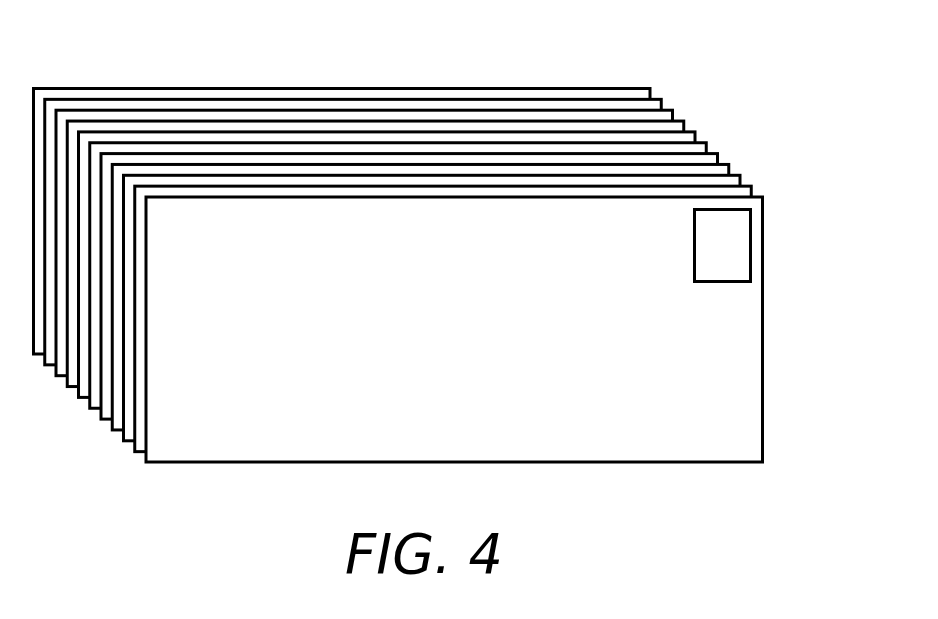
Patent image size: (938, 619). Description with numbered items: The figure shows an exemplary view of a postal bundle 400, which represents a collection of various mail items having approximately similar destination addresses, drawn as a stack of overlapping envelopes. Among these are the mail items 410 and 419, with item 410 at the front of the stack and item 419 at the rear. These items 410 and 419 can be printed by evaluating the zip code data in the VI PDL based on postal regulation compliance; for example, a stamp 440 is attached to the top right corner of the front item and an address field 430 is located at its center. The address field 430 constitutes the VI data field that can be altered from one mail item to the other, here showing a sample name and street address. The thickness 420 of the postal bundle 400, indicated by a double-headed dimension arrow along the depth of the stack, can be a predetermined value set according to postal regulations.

The postal bundle 400 is at (489, 61).
The mail item 410 is at (752, 196).
The mail item 419 is at (640, 88).
The thickness 420 is at (28, 368).
The address field 430 is at (501, 264).
The stamp 440 is at (751, 240).